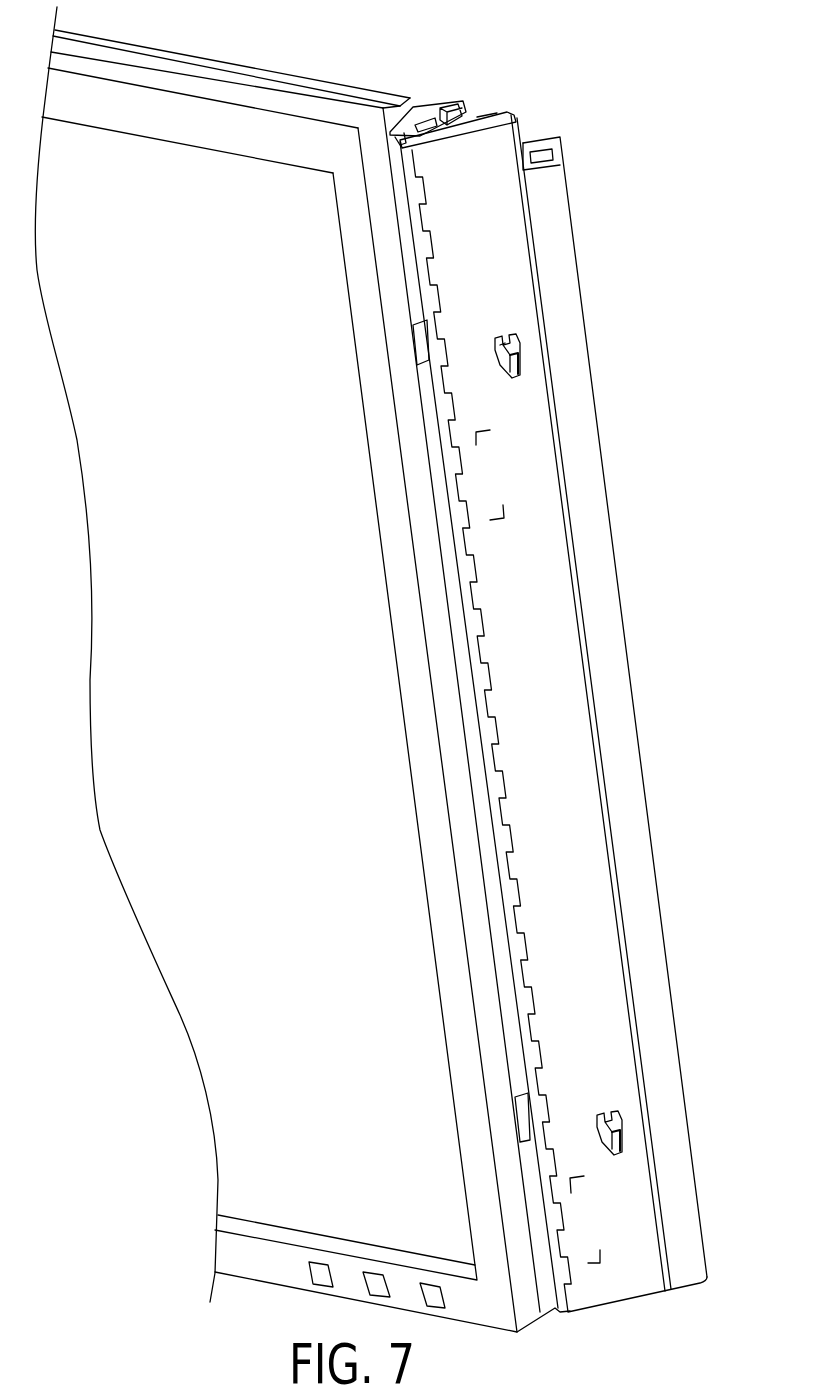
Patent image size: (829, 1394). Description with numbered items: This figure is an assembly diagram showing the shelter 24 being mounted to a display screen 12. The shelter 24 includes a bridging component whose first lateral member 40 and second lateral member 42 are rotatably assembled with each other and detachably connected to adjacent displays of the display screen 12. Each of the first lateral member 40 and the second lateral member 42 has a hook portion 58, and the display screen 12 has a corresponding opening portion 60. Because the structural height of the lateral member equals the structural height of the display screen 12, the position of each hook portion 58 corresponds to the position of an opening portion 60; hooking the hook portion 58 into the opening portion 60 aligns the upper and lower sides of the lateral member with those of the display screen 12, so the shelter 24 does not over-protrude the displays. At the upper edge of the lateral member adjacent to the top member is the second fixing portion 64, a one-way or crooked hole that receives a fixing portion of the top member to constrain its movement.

The display screen 12 is at (306, 137).
The shelter 24 is at (514, 661).
The first lateral member 40 is at (430, 108).
The second lateral member 42 is at (475, 213).
The hook portion 58 is at (520, 360).
The opening portion 60 is at (420, 343).
The second fixing portion 64 is at (446, 104).